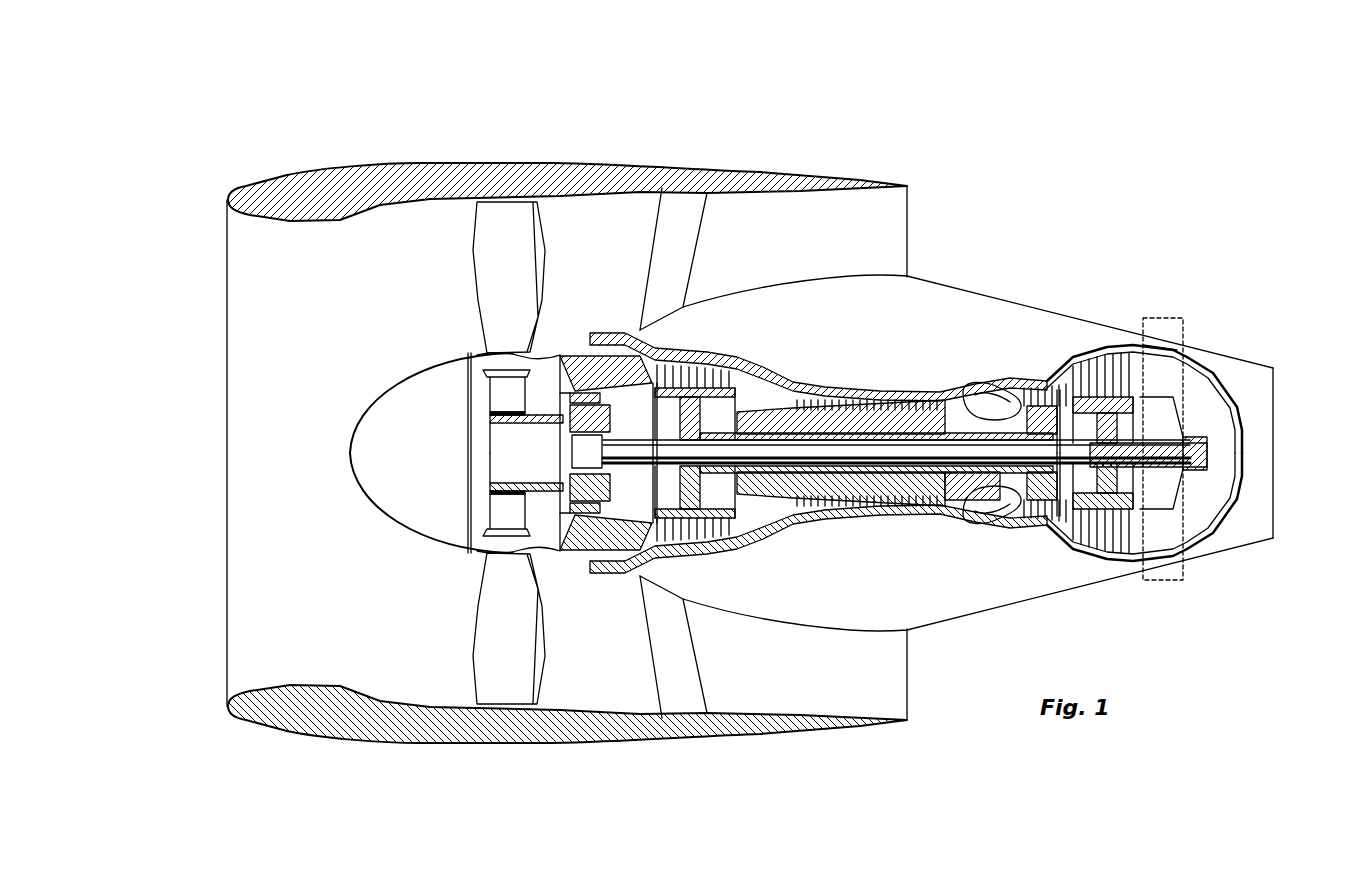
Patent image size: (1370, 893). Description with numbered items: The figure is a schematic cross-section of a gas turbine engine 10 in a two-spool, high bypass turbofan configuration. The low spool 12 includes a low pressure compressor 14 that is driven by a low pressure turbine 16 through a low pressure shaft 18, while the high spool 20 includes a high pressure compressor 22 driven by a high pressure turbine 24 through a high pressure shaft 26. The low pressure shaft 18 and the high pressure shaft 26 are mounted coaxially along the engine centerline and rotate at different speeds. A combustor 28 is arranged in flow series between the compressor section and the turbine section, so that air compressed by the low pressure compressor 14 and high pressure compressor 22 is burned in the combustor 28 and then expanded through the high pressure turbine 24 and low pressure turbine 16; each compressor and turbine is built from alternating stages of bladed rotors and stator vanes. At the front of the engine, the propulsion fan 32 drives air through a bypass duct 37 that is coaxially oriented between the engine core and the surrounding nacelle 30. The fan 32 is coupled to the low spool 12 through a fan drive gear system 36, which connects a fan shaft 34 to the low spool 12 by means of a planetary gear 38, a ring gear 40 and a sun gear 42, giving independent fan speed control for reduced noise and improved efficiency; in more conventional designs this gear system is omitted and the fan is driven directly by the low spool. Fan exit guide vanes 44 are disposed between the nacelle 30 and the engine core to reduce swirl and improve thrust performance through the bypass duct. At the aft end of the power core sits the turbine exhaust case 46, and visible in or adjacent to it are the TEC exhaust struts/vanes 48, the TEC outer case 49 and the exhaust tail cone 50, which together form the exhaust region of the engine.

The gas turbine engine 10 is at (778, 95).
The low spool 12 is at (781, 472).
The low pressure compressor 14 is at (712, 350).
The low pressure turbine 16 is at (1108, 348).
The low pressure shaft 18 is at (745, 470).
The high spool 20 is at (1003, 482).
The high pressure compressor 22 is at (923, 388).
The high pressure turbine 24 is at (1040, 383).
The high pressure shaft 26 is at (962, 484).
The combustor 28 is at (990, 383).
The nacelle 30 is at (580, 158).
The propulsion fan 32 is at (462, 349).
The fan shaft 34 is at (483, 553).
The fan drive gear system 36 is at (556, 447).
The bypass duct 37 is at (600, 687).
The planetary gear 38 is at (548, 560).
The ring gear 40 is at (565, 548).
The sun gear 42 is at (592, 462).
The fan exit guide vanes 44 is at (688, 250).
The turbine exhaust case 46 is at (1130, 592).
The TEC exhaust struts/vanes 48 is at (1178, 387).
The TEC outer case 49 is at (1180, 325).
The exhaust tail cone 50 is at (1222, 458).